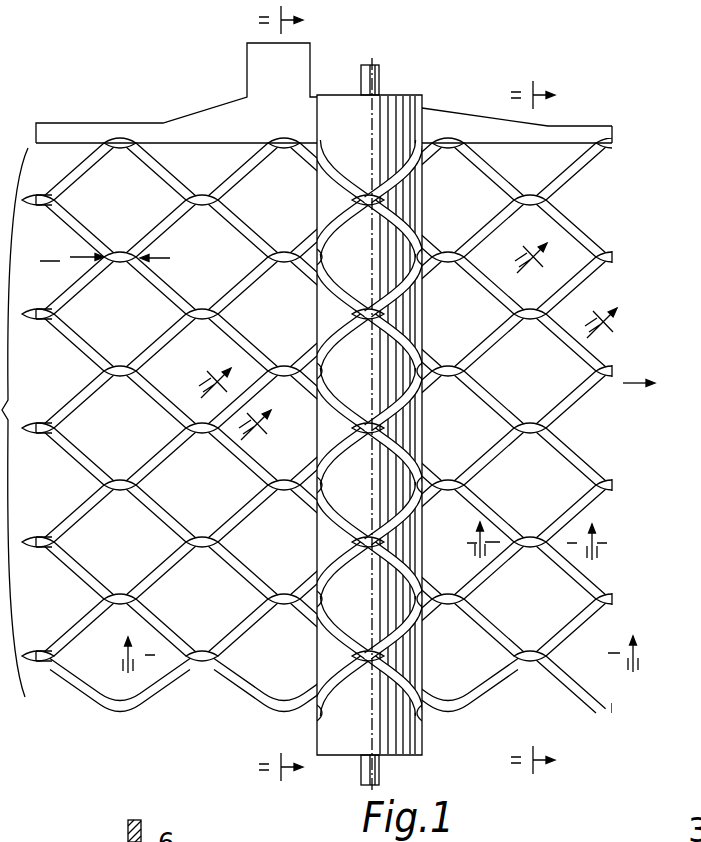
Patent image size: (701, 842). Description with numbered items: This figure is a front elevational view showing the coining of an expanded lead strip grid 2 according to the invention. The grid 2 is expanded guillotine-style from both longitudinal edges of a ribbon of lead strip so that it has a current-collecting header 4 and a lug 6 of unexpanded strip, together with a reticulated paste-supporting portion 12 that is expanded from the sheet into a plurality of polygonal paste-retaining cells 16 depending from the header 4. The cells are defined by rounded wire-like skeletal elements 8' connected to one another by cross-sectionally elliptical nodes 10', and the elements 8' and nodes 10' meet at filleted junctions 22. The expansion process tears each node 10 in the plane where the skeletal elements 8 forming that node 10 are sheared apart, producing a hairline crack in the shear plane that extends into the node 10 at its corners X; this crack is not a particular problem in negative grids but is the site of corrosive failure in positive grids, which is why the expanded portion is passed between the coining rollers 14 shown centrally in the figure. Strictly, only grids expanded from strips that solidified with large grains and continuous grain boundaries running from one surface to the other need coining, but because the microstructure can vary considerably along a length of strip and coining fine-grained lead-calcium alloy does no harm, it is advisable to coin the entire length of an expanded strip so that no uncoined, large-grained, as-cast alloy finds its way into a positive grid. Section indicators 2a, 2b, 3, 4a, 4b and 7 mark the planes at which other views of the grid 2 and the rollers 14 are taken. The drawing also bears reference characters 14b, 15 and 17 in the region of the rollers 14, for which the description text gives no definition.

The grid 2 is at (604, 120).
The section line 2a is at (254, 397).
The section line 2b is at (242, 399).
The section line 3 is at (547, 432).
The current-collecting header 4 is at (468, 121).
The section line 4a is at (585, 286).
The section line 4b is at (542, 549).
The lug 6 is at (293, 62).
The section line 7 is at (379, 668).
The skeletal elements 8 is at (198, 427).
The rounded wire-like skeletal elements 8' is at (492, 428).
The node 10 is at (161, 399).
The cross-sectionally elliptical nodes 10' is at (489, 399).
The reticulated paste-supporting portion 12 is at (603, 237).
The coining rollers 14 is at (392, 113).
The roller housing outline and shaft 14b is at (369, 425).
The curved strands in compressed zone 15 is at (334, 168).
The polygonal paste-retaining cells 16 is at (588, 420).
The central bonds in compressed zone 17 is at (369, 197).
The filleted junctions 22 is at (512, 427).
The corners X is at (105, 250).